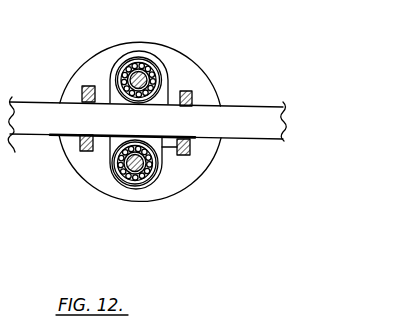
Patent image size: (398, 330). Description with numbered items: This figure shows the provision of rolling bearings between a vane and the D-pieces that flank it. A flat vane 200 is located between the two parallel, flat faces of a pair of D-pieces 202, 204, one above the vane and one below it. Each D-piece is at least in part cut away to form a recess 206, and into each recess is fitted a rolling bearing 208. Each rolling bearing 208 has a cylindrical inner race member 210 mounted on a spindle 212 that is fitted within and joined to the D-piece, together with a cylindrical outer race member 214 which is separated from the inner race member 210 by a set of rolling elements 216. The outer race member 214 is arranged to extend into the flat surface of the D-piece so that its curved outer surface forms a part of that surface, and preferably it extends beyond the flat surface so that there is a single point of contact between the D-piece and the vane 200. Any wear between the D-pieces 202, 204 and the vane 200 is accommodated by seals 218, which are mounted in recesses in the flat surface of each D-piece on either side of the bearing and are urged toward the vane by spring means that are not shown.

The vane 200 is at (147, 131).
The D-piece 202 is at (180, 70).
The D-piece 204 is at (211, 168).
The recess 206 is at (119, 136).
The rolling bearing 208 is at (110, 176).
The inner race member 210 is at (152, 182).
The spindle 212 is at (140, 172).
The outer race member 214 is at (134, 187).
The rolling elements 216 is at (124, 186).
The seals 218 is at (80, 137).